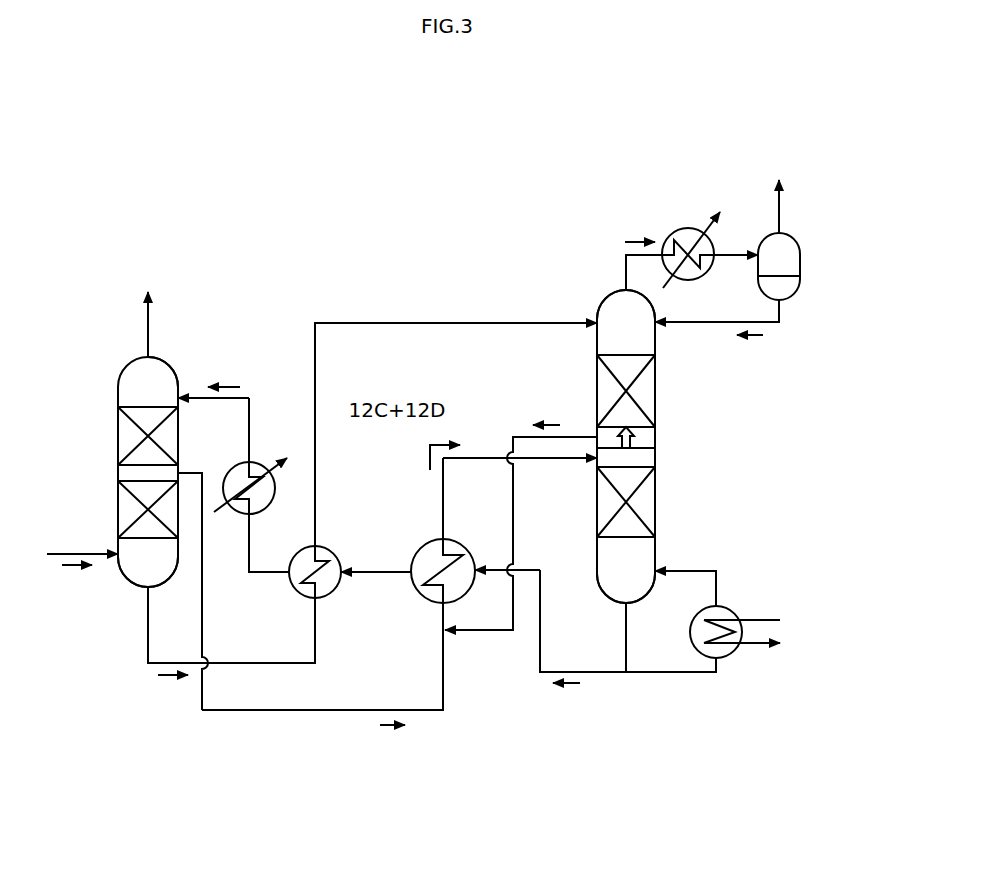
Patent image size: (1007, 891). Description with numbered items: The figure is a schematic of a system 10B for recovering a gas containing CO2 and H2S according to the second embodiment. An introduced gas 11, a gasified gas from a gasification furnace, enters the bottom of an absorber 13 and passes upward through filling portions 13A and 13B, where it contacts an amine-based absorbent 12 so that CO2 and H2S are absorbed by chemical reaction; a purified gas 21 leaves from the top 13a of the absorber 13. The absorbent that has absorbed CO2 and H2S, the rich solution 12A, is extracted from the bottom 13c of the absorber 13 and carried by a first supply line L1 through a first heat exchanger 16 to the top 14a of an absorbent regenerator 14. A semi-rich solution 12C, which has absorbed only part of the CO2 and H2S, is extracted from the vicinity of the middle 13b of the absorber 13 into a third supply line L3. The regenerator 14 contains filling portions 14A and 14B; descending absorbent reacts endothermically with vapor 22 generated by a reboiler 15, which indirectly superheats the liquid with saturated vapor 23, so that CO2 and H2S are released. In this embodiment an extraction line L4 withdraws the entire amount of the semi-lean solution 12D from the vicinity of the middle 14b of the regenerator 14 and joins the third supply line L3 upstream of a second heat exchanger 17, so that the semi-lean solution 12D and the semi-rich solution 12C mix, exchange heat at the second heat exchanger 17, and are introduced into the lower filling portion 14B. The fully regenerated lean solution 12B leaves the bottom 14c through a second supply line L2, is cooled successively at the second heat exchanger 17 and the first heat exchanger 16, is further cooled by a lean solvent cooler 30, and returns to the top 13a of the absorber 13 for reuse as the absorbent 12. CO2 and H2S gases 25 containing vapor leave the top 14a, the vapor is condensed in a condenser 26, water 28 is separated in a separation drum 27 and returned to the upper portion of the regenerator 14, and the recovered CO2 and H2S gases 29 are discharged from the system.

The system for recovering a gas containing CO2 and H2S 10B is at (442, 170).
The introduced gas 11 is at (73, 572).
The absorbent 12 is at (244, 385).
The rich solution 12A is at (168, 683).
The lean solution 12B is at (568, 690).
The semi-rich solution 12C is at (392, 734).
The semi-lean solution 12D is at (548, 420).
The absorber 13 is at (134, 514).
The filling portion 13A is at (118, 437).
The filling portion 13B is at (118, 512).
The top of the absorber 13a is at (173, 364).
The middle of the absorber 13b is at (182, 471).
The bottom of the absorber 13c is at (132, 592).
The absorbent regenerator 14 is at (654, 450).
The filling portion 14A is at (656, 392).
The lower filling portion 14B is at (656, 490).
The top of the regenerator 14a is at (611, 296).
The middle of the regenerator 14b is at (595, 463).
The bottom of the regenerator 14c is at (606, 605).
The reboiler 15 is at (727, 660).
The first heat exchanger 16 is at (318, 546).
The second heat exchanger 17 is at (452, 539).
The purified gas 21 is at (150, 318).
The vapor 22 is at (688, 571).
The saturated vapor 23 is at (765, 619).
The CO2 and H2S gases 25 is at (640, 238).
The condenser 26 is at (680, 228).
The separation drum 27 is at (801, 263).
The water 28 is at (752, 343).
The CO2 and H2S gases 29 is at (779, 190).
The lean solvent cooler 30 is at (258, 462).
The first supply line L1 is at (248, 663).
The second supply line L2 is at (540, 656).
The third supply line L3 is at (275, 711).
The extraction line L4 is at (513, 437).